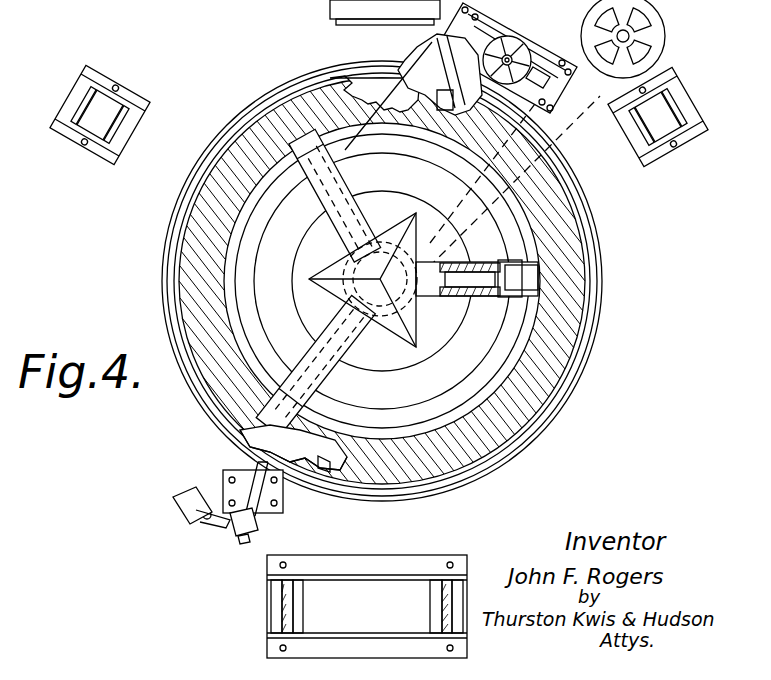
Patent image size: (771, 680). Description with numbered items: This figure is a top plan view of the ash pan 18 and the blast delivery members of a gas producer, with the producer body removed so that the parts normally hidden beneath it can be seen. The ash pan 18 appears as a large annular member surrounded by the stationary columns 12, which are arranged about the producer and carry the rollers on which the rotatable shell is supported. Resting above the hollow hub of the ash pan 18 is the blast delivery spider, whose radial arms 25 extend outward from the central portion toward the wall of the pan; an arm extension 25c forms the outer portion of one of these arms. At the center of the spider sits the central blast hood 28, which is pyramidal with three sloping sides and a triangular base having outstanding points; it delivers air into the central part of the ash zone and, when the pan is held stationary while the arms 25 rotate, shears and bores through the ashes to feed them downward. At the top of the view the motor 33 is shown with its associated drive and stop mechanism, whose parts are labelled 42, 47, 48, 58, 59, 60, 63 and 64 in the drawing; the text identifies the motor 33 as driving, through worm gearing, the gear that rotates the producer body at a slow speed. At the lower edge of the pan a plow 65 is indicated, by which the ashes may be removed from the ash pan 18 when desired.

The stationary columns 12 is at (104, 145).
The ash pan 18 is at (584, 322).
The radial arms 25 is at (345, 183).
The arm extension 25c is at (477, 262).
The central blast hood 28 is at (333, 257).
The motor 33 is at (375, 2).
The lever 42 is at (249, 0).
The hand wheel 47 is at (197, 0).
The link 48 is at (307, 0).
The pivot pin 58 is at (208, 510).
The latch block 59 is at (201, 522).
The stop bracket 60 is at (240, 538).
The clamp plate 63 is at (294, 450).
The wedge 64 is at (326, 464).
The plow 65 is at (334, 161).